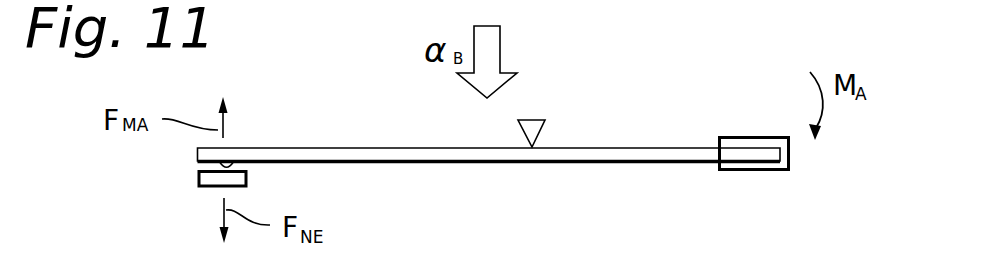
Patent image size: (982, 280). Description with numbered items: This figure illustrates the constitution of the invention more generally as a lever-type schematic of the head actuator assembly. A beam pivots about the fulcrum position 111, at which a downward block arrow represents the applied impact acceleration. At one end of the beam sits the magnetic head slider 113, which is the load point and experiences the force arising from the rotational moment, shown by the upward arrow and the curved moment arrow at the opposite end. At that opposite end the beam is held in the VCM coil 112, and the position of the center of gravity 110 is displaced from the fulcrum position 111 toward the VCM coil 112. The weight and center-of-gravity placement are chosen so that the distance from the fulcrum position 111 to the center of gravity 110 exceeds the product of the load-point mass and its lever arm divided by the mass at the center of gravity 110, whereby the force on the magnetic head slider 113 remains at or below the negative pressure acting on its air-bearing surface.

The position of center of gravity 110 is at (575, 168).
The fulcrum position 111 is at (543, 134).
The VCM coil 112 is at (790, 155).
The magnetic head slider 113 is at (197, 180).